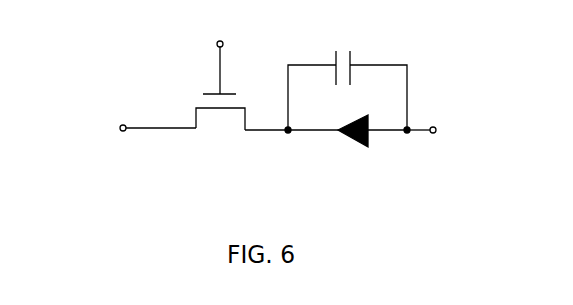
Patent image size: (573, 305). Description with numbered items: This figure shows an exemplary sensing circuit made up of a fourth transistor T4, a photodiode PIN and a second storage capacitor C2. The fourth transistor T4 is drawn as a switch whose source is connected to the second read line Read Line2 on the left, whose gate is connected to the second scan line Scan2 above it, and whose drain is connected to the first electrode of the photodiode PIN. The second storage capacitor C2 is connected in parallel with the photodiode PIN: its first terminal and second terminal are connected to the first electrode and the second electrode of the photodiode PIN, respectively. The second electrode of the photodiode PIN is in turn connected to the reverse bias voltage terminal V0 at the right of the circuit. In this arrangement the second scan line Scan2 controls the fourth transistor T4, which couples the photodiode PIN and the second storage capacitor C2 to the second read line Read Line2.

The fourth transistor T4 is at (220, 98).
The second storage capacitor C2 is at (347, 80).
The photodiode PIN is at (356, 143).
The reverse bias voltage terminal V0 is at (439, 132).
The second scan line Scan2 is at (225, 33).
The second read line Read Line2 is at (130, 115).